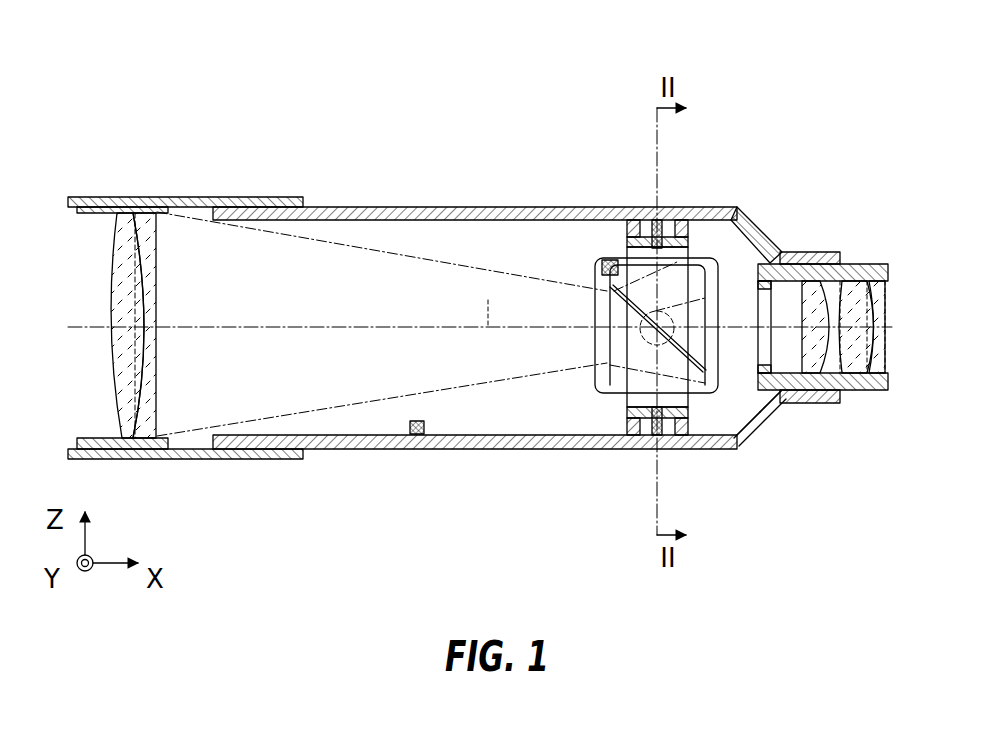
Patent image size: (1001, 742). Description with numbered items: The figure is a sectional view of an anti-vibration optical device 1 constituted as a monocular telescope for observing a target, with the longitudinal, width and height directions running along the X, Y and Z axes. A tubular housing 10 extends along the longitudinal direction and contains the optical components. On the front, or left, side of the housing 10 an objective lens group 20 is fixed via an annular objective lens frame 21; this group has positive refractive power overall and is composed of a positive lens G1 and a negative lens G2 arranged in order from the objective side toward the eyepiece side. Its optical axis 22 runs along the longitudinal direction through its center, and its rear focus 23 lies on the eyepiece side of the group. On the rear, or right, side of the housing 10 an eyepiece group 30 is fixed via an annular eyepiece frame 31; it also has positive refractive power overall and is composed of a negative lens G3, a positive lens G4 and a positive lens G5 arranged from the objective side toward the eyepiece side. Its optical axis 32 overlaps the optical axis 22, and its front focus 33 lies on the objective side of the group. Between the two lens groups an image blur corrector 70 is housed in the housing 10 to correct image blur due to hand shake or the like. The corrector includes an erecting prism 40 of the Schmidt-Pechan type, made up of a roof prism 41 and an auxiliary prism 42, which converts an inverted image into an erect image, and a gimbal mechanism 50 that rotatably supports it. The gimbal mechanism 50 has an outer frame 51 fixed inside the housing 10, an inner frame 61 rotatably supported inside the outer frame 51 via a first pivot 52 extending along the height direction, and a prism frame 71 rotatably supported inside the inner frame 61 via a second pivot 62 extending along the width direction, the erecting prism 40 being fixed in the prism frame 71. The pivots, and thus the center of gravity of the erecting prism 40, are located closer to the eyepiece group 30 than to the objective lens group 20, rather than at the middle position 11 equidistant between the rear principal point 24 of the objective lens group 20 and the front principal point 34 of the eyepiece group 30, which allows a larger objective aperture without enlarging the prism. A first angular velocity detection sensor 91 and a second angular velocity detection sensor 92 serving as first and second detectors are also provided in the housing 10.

The anti-vibration optical device 1 is at (850, 114).
The housing 10 is at (400, 207).
The middle position 11 is at (487, 327).
The objective lens group 20 is at (162, 327).
The objective lens frame 21 is at (172, 197).
The optical axis 22 is at (247, 327).
The rear focus 23 is at (810, 429).
The rear principal point 24 is at (101, 288).
The eyepiece group 30 is at (848, 325).
The eyepiece frame 31 is at (873, 262).
The optical axis 32 is at (787, 262).
The front focus 33 is at (781, 403).
The front principal point 34 is at (858, 372).
The erecting prism 40 is at (635, 325).
The roof prism 41 is at (740, 441).
The auxiliary prism 42 is at (722, 398).
The gimbal mechanism 50 is at (657, 313).
The outer frame 51 is at (640, 422).
The first pivot 52 is at (650, 219).
The inner frame 61 is at (627, 408).
The second pivot 62 is at (593, 383).
The image blur corrector 70 is at (690, 199).
The prism frame 71 is at (612, 385).
The first angular velocity detection sensor 91 is at (413, 432).
The second angular velocity detection sensor 92 is at (602, 266).
The positive lens G1 is at (122, 240).
The negative lens G2 is at (132, 217).
The negative lens G3 is at (815, 373).
The positive lens G4 is at (846, 372).
The positive lens G5 is at (888, 368).